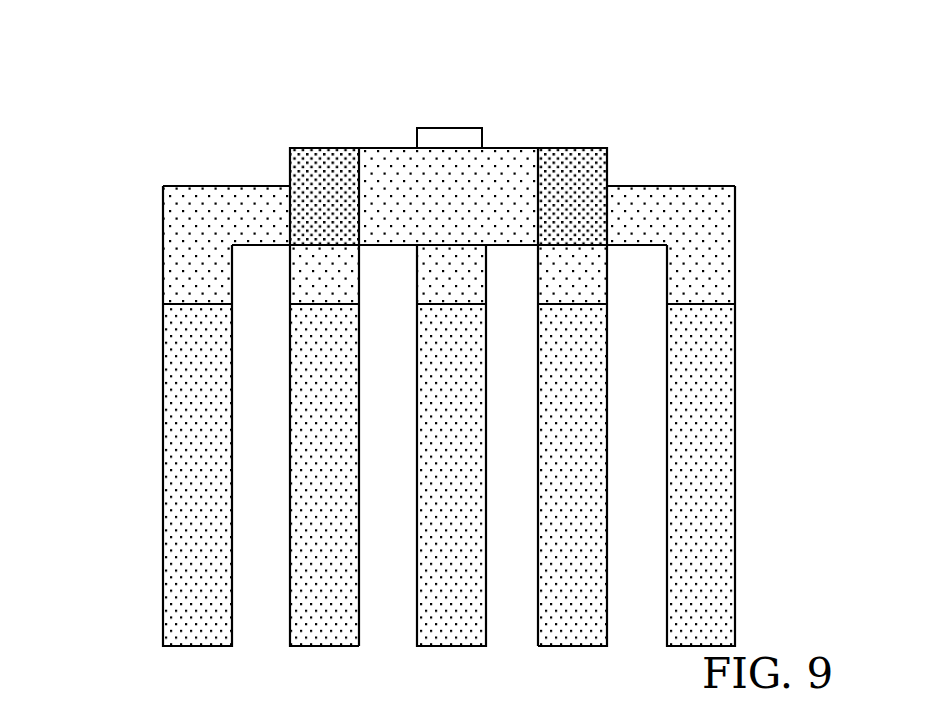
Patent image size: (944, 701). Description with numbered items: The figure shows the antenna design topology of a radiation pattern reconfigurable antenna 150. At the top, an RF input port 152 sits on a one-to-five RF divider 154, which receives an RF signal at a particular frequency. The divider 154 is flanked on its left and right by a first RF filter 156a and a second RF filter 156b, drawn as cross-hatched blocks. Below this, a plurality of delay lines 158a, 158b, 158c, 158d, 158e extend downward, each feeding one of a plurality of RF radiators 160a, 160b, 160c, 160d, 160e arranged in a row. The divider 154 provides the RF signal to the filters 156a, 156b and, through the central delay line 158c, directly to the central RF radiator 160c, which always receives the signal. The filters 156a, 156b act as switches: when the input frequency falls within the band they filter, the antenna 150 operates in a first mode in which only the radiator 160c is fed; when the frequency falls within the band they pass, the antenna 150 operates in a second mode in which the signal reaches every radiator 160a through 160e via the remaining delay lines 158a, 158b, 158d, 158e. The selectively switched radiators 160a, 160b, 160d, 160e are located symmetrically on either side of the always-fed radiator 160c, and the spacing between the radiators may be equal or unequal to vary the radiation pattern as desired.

The radiation pattern reconfigurable antenna 150 is at (272, 85).
The RF input port 152 is at (440, 128).
The one-to-five RF divider 154 is at (490, 160).
The first RF filter 156a is at (300, 152).
The second RF filter 156b is at (600, 163).
The delay line 158a is at (175, 280).
The delay line 158b is at (315, 258).
The delay line 158c is at (470, 268).
The delay line 158d is at (583, 260).
The delay line 158e is at (722, 280).
The RF radiator 160a is at (180, 418).
The RF radiator 160b is at (310, 405).
The RF radiator 160c is at (462, 407).
The RF radiator 160d is at (585, 407).
The RF radiator 160e is at (715, 420).